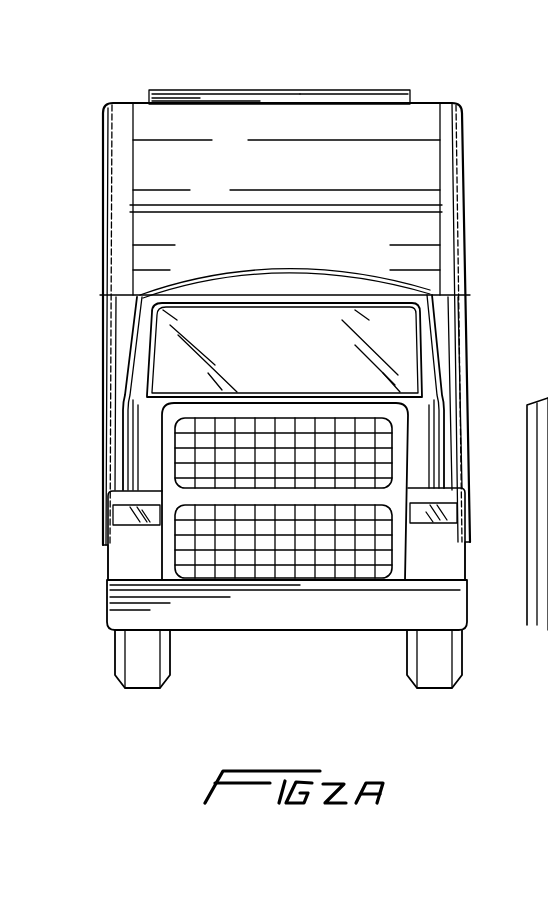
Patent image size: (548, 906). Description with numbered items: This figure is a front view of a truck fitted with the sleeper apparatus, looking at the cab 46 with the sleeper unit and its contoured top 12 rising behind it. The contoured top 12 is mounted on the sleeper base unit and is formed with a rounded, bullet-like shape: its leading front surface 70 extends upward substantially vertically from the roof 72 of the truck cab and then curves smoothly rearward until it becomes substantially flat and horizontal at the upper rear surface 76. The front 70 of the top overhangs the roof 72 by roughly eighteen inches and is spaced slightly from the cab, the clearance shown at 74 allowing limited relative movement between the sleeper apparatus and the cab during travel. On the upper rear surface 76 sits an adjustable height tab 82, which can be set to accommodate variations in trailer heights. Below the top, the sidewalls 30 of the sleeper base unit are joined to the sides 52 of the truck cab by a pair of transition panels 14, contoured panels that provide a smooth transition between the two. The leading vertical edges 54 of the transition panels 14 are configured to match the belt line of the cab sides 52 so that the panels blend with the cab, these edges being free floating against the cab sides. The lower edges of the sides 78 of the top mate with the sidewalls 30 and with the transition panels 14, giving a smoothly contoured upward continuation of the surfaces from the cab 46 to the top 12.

The contoured top 12 is at (472, 128).
The transition panels 14 is at (118, 403).
The sidewalls of the sleeper base unit 30 is at (103, 362).
The cab 46 is at (477, 310).
The sides of the truck cab 52 is at (133, 452).
The leading vertical edges of the transition panels 54 is at (122, 428).
The front of the top 70 is at (427, 243).
The roof of the truck cab 72 is at (263, 285).
The spacing between top and cab 74 is at (352, 278).
The upper rear surface of the top 76 is at (418, 110).
The sides of the top 78 is at (103, 195).
The adjustable height tab 82 is at (356, 92).